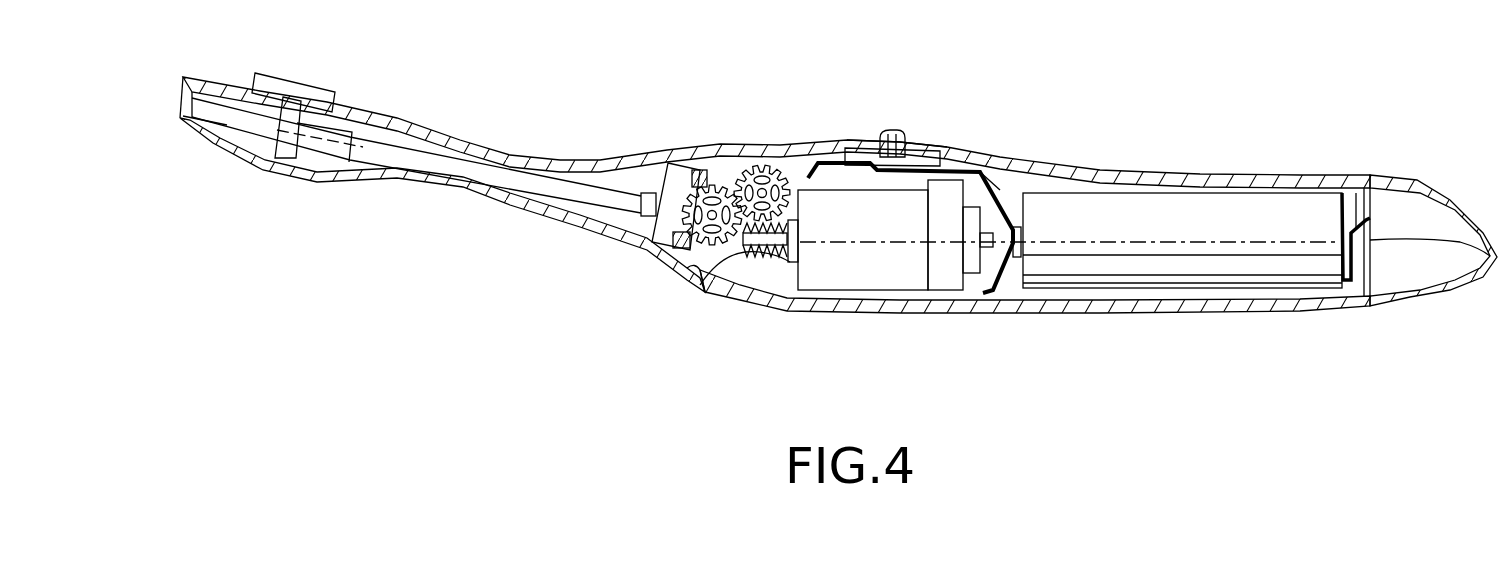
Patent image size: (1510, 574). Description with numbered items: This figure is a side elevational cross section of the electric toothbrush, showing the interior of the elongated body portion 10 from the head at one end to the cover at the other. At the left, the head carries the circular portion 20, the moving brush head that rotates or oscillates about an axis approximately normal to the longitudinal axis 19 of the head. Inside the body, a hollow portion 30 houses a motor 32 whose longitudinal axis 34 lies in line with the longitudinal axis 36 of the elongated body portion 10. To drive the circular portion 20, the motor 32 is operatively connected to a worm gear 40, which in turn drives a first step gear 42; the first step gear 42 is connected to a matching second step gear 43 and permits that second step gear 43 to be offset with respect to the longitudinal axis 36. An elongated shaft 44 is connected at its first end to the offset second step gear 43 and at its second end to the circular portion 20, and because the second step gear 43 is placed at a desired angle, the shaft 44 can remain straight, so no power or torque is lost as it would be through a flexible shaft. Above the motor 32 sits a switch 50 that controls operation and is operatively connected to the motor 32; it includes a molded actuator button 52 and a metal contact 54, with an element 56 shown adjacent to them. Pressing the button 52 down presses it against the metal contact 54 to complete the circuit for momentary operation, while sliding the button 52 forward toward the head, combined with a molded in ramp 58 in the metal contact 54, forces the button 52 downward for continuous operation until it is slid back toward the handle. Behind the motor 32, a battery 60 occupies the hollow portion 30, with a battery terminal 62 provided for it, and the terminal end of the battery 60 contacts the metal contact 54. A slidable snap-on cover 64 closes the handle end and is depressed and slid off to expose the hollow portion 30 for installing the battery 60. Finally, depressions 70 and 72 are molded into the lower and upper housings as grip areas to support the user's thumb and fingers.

The elongated body portion 10 is at (1270, 300).
The longitudinal axis 19 is at (223, 125).
The circular portion 20 is at (287, 115).
The hollow portion 30 is at (1008, 287).
The motor 32 is at (818, 280).
The longitudinal axis 34 is at (858, 242).
The longitudinal axis 36 is at (1270, 180).
The worm gear 40 is at (740, 252).
The first step gear 42 is at (765, 162).
The second step gear 43 is at (718, 187).
The elongated shaft 44 is at (427, 163).
The switch 50 is at (937, 140).
The molded actuator button 52 is at (887, 128).
The metal contact 54 is at (1000, 190).
The switch slider 56 is at (862, 140).
The molded in ramp 58 is at (868, 168).
The battery 60 is at (1150, 277).
The battery terminal 62 is at (1357, 260).
The slidable snap-on cover 64 is at (1395, 210).
The depression 70 is at (730, 287).
The depression 72 is at (734, 148).